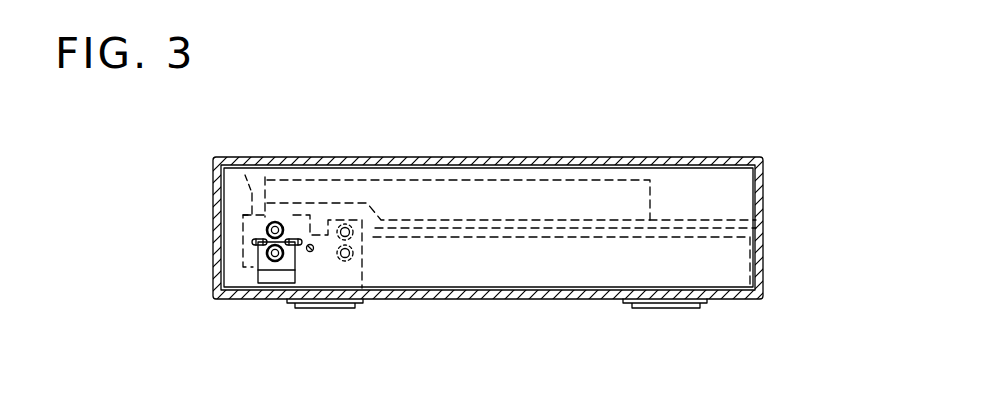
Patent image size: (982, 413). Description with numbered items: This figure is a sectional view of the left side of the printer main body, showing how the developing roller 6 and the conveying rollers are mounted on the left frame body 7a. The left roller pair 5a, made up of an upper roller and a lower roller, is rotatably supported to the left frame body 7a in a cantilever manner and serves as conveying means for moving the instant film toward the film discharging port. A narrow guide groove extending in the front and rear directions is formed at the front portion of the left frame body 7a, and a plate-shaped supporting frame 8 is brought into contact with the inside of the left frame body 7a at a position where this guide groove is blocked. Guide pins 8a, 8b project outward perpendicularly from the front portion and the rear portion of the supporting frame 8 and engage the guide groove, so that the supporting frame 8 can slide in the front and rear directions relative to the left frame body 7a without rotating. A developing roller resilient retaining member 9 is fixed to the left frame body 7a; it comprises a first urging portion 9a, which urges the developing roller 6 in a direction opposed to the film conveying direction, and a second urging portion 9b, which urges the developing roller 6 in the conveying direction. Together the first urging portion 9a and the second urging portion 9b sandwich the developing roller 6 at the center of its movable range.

The left roller pair 5a is at (350, 236).
The developing roller 6 is at (270, 222).
The left frame body 7a is at (718, 264).
The supporting frame 8 is at (243, 176).
The guide pin 8a is at (258, 239).
The guide pin 8b is at (294, 238).
The developing roller resilient retaining member 9 is at (262, 275).
The first urging portion 9a is at (266, 254).
The second urging portion 9b is at (300, 252).